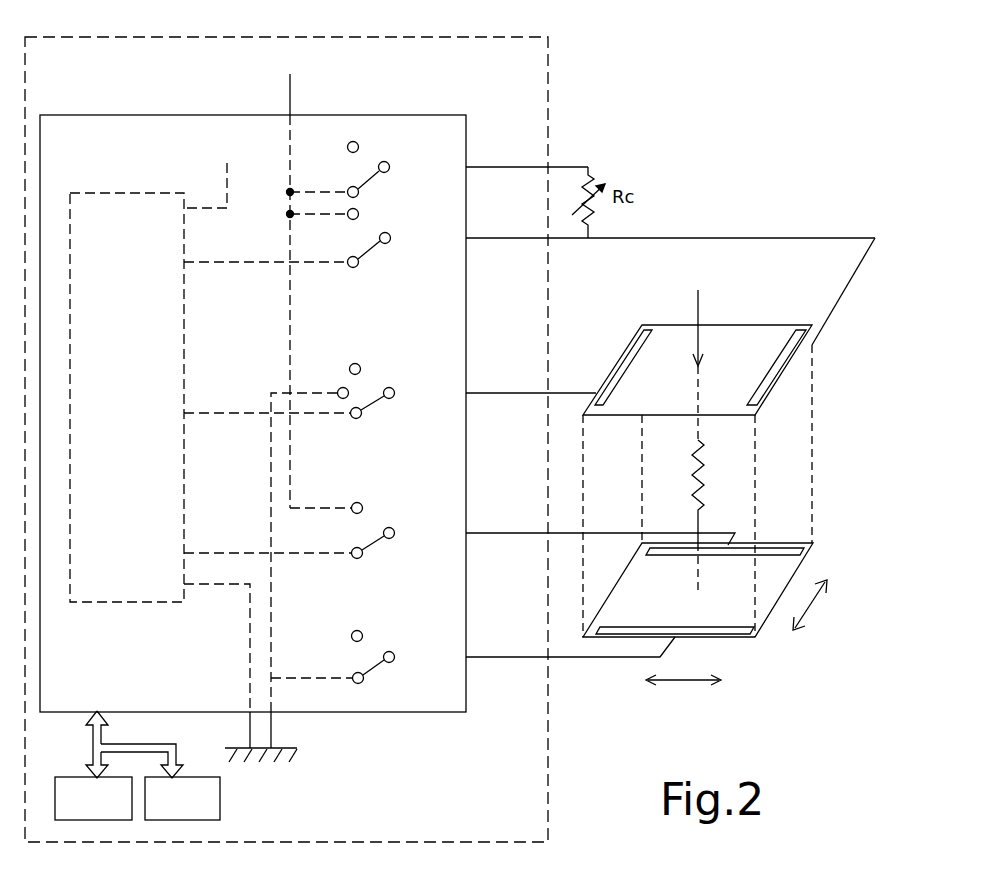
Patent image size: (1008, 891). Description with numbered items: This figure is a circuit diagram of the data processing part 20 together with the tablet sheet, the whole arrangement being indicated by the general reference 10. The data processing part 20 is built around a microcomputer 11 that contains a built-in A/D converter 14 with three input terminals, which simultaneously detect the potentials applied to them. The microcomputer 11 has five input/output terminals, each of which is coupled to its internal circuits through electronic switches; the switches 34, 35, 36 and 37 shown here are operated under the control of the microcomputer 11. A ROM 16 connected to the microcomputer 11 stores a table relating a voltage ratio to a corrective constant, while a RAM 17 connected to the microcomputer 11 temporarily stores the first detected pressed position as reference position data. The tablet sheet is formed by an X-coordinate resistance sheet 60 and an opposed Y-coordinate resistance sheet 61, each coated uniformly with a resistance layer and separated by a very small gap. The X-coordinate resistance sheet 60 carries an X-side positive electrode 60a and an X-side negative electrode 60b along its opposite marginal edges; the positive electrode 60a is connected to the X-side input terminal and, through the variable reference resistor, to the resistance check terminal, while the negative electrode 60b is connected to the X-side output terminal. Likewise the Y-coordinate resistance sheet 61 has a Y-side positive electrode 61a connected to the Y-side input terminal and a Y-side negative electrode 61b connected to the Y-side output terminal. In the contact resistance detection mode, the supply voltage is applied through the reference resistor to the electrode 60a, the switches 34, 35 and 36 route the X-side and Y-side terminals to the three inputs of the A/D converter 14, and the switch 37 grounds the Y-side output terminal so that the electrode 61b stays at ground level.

The coordinate input system 10 is at (672, 143).
The microcomputer 11 is at (450, 113).
The A/D converter 14 is at (110, 192).
The ROM 16 is at (72, 777).
The RAM 17 is at (220, 790).
The data processing part 20 is at (548, 48).
The electronic switch 34 is at (374, 245).
The electronic switch 35 is at (380, 163).
The electronic switch 36 is at (379, 538).
The electronic switch 37 is at (380, 663).
The X-coordinate resistance sheet 60 is at (765, 336).
The X-side positive electrode 60a is at (778, 367).
The X-side negative electrode 60b is at (622, 364).
The Y-coordinate resistance sheet 61 is at (768, 583).
The Y-side positive electrode 61a is at (780, 545).
The Y-side negative electrode 61b is at (742, 636).